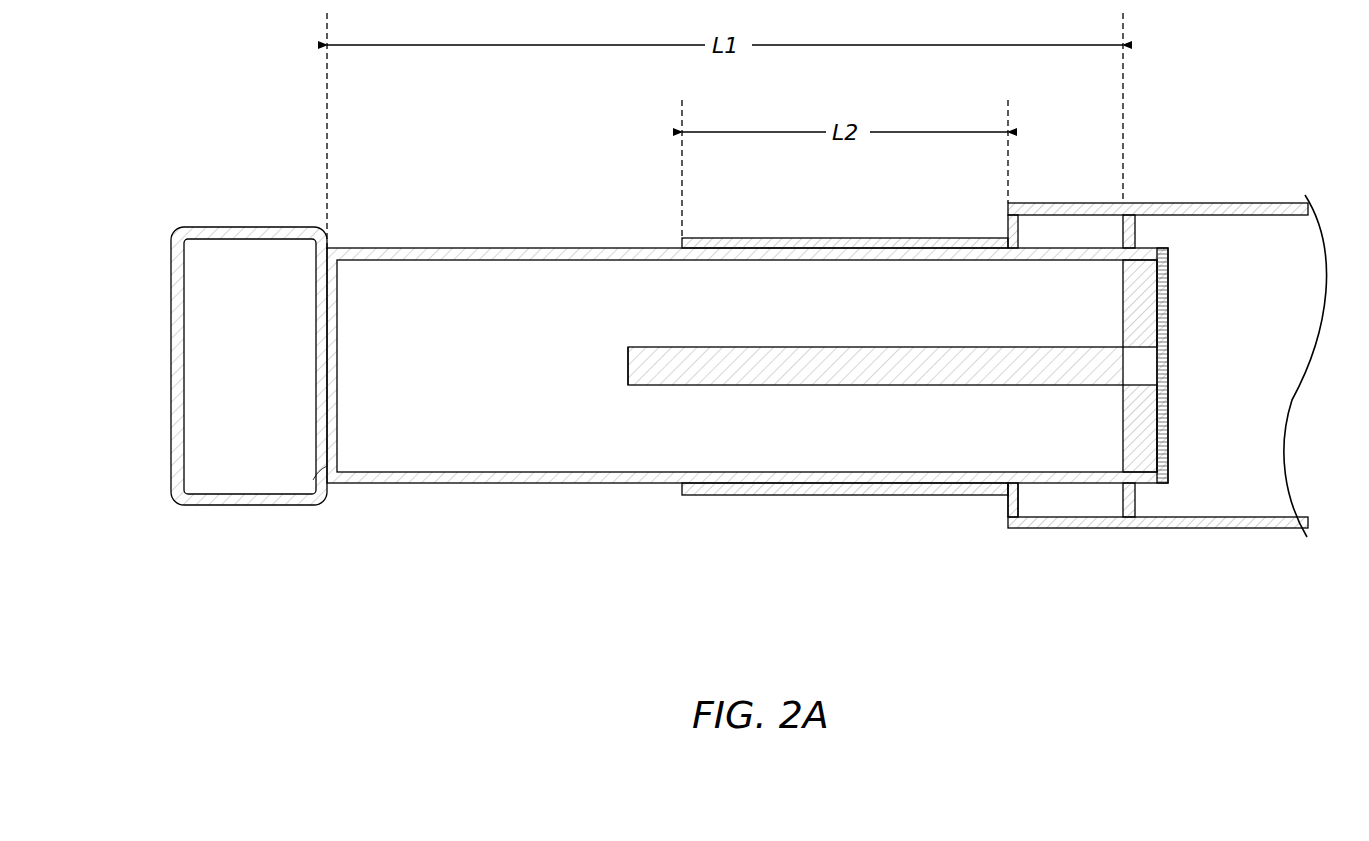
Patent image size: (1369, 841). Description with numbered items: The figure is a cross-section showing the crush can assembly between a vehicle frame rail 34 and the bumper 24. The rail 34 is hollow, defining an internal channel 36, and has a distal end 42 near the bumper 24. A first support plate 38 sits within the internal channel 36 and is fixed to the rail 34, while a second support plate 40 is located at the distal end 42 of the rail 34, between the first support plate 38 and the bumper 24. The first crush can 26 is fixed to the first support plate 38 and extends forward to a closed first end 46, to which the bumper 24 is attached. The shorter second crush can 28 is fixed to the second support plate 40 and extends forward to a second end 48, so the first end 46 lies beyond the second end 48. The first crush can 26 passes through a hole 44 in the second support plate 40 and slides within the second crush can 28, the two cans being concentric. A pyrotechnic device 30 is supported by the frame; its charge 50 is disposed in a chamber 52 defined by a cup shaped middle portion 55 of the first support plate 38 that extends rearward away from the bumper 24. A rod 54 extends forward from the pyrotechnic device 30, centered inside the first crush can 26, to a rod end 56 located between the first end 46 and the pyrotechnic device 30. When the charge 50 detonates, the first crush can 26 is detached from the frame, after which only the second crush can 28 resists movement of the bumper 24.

The bumper 24 is at (222, 228).
The first crush can 26 is at (504, 486).
The second crush can 28 is at (792, 496).
The pyrotechnic device 30 is at (1163, 233).
The rail 34 is at (1247, 203).
The internal channel 36 is at (1080, 500).
The first support plate 38 is at (1140, 508).
The second support plate 40 is at (1020, 500).
The distal end 42 is at (1008, 505).
The hole 44 is at (1013, 490).
The first end 46 is at (325, 472).
The second end 48 is at (680, 242).
The charge 50 is at (1142, 288).
The chamber 52 is at (1140, 433).
The rod 54 is at (832, 365).
The cup shaped middle portion 55 is at (1172, 330).
The rod end 56 is at (678, 364).